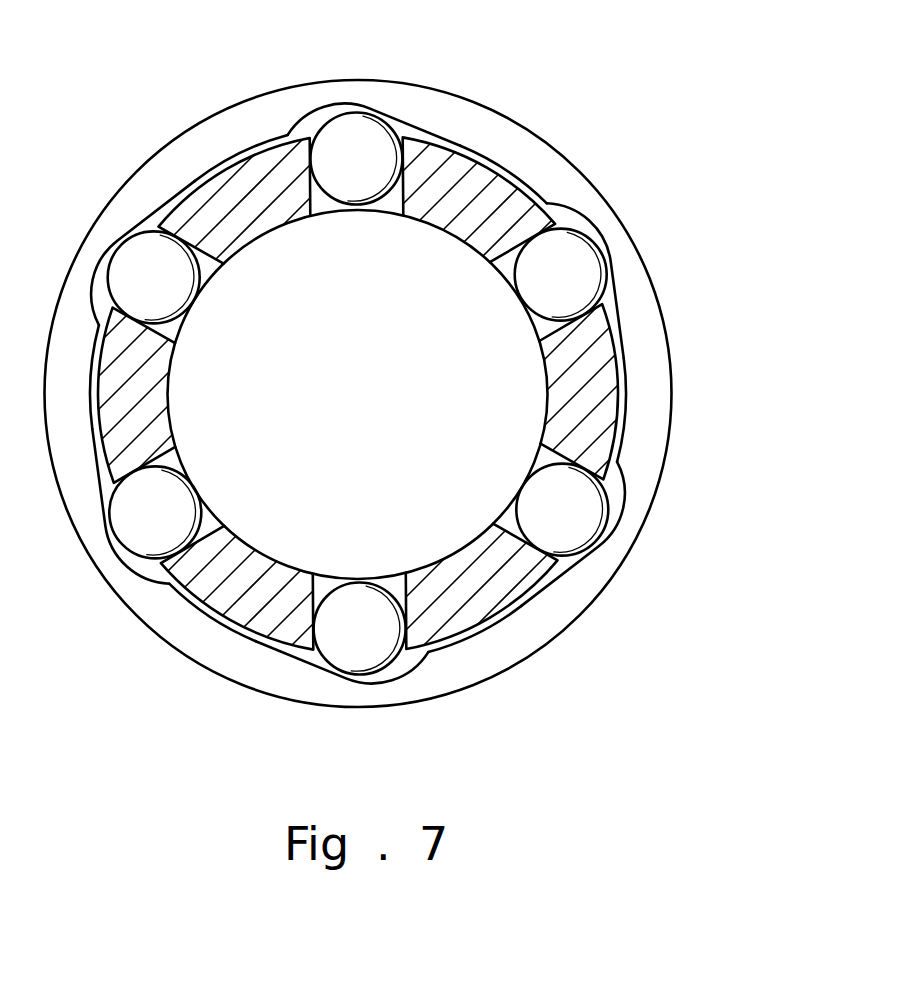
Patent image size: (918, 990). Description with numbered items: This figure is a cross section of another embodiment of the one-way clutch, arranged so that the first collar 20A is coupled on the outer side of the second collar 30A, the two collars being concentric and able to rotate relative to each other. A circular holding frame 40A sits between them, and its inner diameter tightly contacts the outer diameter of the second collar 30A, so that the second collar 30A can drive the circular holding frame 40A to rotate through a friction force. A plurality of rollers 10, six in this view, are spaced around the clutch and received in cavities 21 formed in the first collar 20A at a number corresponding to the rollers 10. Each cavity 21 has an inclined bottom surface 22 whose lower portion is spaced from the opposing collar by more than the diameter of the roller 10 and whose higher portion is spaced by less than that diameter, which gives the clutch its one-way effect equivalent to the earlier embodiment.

The roller 10 is at (570, 272).
The first collar 20A is at (650, 363).
The cavity 21 is at (582, 218).
The inclined bottom surface 22 is at (617, 300).
The second collar 30A is at (418, 230).
The circular holding frame 40A is at (500, 197).